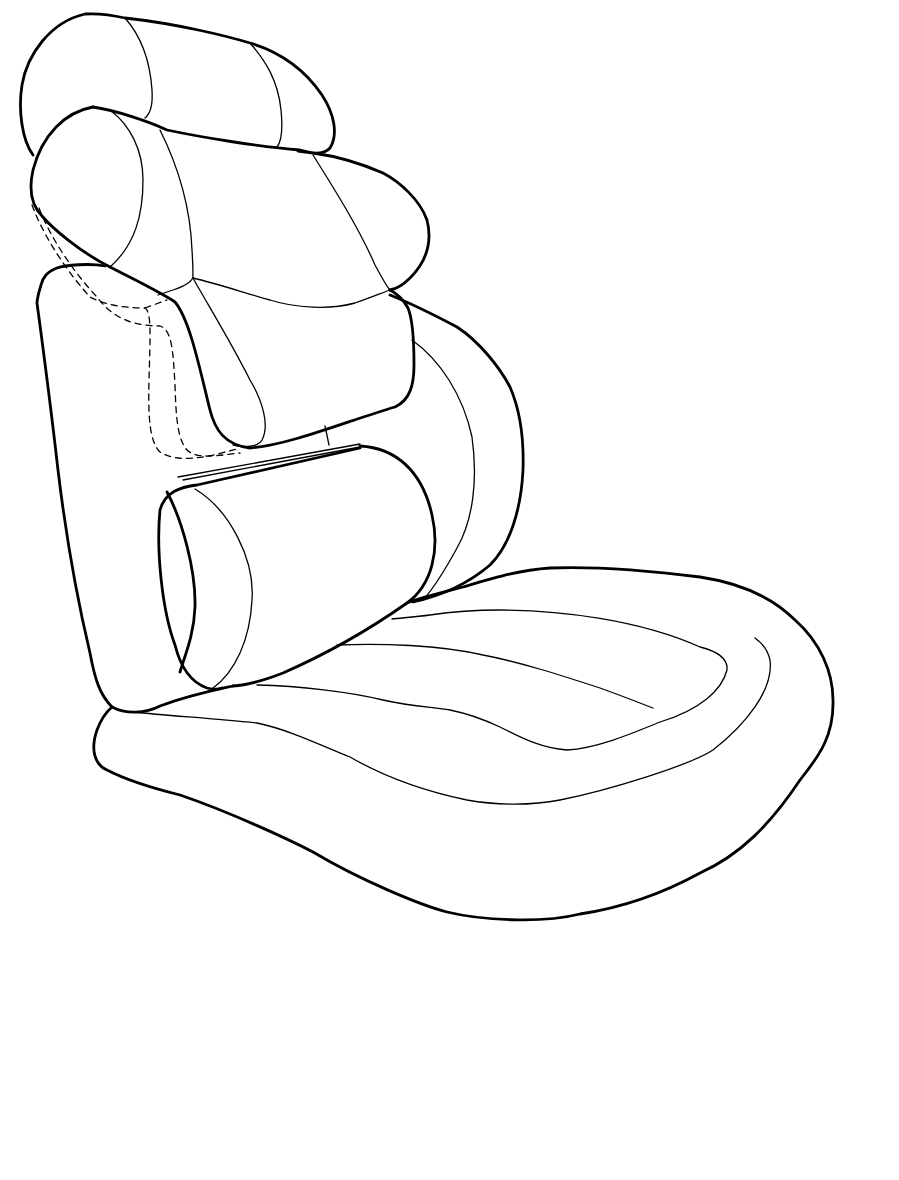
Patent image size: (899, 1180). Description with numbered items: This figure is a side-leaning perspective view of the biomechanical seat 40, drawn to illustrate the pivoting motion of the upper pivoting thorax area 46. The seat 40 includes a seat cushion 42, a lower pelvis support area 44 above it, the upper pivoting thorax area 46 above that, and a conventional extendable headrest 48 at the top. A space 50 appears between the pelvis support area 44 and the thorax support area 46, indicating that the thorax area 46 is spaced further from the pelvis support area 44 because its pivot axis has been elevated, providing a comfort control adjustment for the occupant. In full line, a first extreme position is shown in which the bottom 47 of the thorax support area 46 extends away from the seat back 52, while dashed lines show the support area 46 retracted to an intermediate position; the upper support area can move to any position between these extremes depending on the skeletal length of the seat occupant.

The biomechanical seat 40 is at (277, 857).
The seat cushion 42 is at (713, 817).
The lower pelvis support area 44 is at (327, 563).
The upper pivoting thorax area 46 is at (286, 232).
The bottom of support area 47 is at (353, 418).
The extendable headrest 48 is at (228, 104).
The space 50 is at (148, 480).
The seat back 52 is at (97, 416).